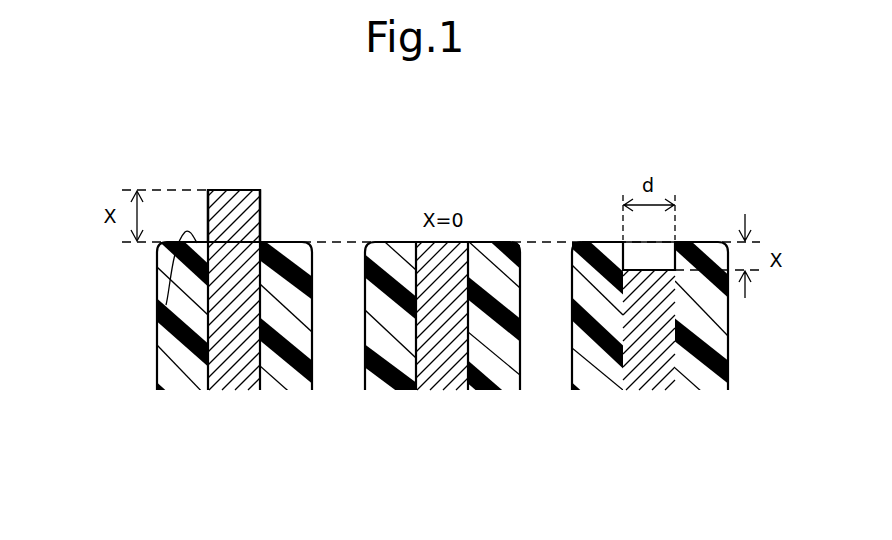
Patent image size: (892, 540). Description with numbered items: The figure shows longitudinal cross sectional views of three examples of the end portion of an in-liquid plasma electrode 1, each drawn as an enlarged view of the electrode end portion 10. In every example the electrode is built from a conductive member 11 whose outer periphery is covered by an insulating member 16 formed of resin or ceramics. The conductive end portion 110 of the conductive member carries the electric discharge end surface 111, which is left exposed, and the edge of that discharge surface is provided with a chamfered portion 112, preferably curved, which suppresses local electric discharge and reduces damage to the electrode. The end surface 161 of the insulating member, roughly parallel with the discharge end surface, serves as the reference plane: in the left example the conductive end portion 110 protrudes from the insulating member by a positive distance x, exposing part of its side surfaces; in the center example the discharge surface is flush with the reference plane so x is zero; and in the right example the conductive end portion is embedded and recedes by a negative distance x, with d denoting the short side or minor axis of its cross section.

The in-liquid plasma electrode 1 is at (412, 297).
The electrode end portion 10 is at (412, 295).
The conductive member 11 is at (222, 295).
The insulating member 16 is at (178, 398).
The conductive end portion 110 is at (230, 217).
The electric discharge end surface 111 is at (233, 190).
The chamfered portion 112 is at (209, 190).
The end surface of the insulating member 161 is at (156, 303).